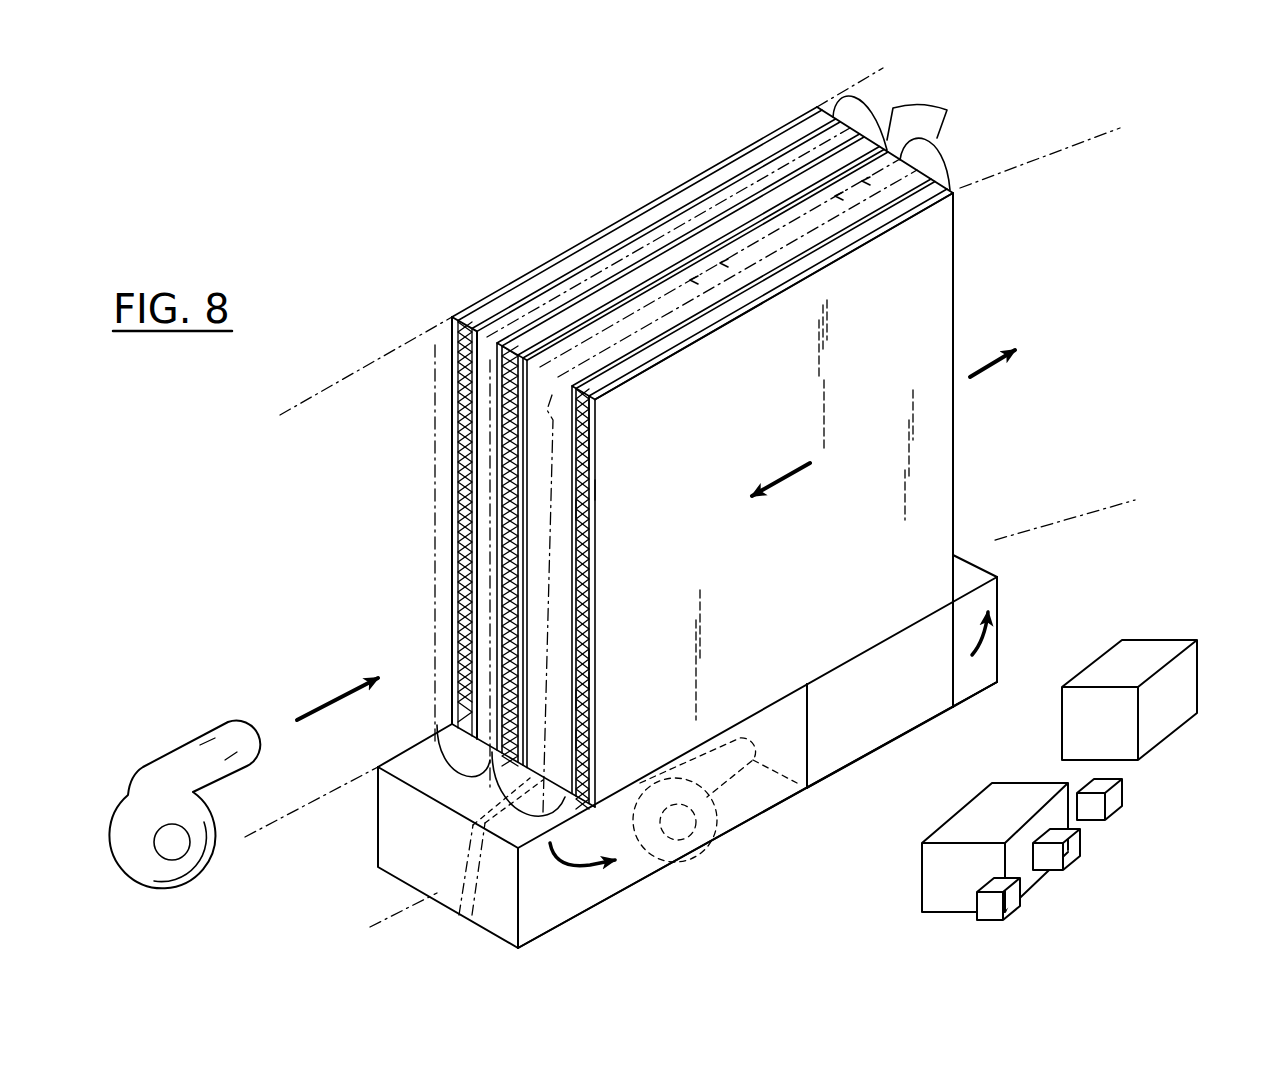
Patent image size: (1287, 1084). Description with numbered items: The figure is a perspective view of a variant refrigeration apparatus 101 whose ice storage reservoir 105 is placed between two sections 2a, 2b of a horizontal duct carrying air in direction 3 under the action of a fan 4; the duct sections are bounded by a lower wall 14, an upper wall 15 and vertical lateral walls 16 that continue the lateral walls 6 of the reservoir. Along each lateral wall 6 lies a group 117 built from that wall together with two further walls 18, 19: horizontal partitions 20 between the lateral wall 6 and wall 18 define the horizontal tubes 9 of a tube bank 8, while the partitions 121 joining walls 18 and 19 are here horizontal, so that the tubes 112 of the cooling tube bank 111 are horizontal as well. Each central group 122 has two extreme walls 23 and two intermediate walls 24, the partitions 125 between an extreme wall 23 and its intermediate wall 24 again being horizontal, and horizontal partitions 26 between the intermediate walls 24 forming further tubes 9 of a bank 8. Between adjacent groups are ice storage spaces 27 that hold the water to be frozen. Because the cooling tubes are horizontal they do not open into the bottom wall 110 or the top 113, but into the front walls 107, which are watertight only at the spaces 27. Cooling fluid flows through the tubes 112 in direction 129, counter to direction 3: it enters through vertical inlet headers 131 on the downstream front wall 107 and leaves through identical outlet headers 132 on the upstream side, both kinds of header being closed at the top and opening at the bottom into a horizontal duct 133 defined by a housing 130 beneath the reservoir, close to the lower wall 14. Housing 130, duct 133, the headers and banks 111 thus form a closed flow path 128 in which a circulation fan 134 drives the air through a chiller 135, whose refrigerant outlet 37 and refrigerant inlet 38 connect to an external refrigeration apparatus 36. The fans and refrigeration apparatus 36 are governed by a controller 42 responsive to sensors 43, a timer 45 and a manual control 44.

The refrigeration apparatus 101 is at (612, 172).
The front wall 107 is at (955, 248).
The flat partitions 26 is at (452, 440).
The lateral wall 6 is at (452, 556).
The tubes 9 is at (480, 617).
The tube bank 8 is at (480, 640).
The group 117 is at (600, 440).
The partitions 125 is at (548, 462).
The tube bank 111 is at (597, 487).
The tubes 112 is at (587, 513).
The wall 18 is at (588, 660).
The partitions 20 is at (587, 680).
The wall 19 is at (583, 700).
The partitions 121 is at (583, 740).
The group 122 is at (497, 353).
The extreme walls 23 is at (592, 325).
The spaces 27 is at (767, 233).
The top 113 is at (777, 257).
The intermediate walls 24 is at (627, 285).
The cooling fluid inlet headers 131 is at (947, 110).
The lower wall 14 is at (470, 883).
The outlet headers 132 is at (470, 838).
The closed flow path 128 is at (548, 910).
The housing 130 is at (640, 883).
The bottom wall 110 is at (770, 707).
The refrigerant inlet 38 is at (823, 730).
The horizontal duct 133 is at (865, 757).
The chiller 135 is at (907, 720).
The ice storage reservoir 105 is at (883, 612).
The refrigerant outlet 37 is at (940, 663).
The circulation fan 134 is at (700, 835).
The fan 4 is at (150, 870).
The direction 3 is at (337, 707).
The direction 129 is at (780, 490).
The upper wall 15 is at (1020, 120).
The lateral walls 16 is at (1100, 133).
The section 2a is at (377, 927).
The section 2b is at (1020, 545).
The refrigeration apparatus 36 is at (1180, 687).
The controller 42 is at (933, 887).
The sensors 43 is at (1010, 905).
The manual control 44 is at (1070, 855).
The timer 45 is at (1118, 800).